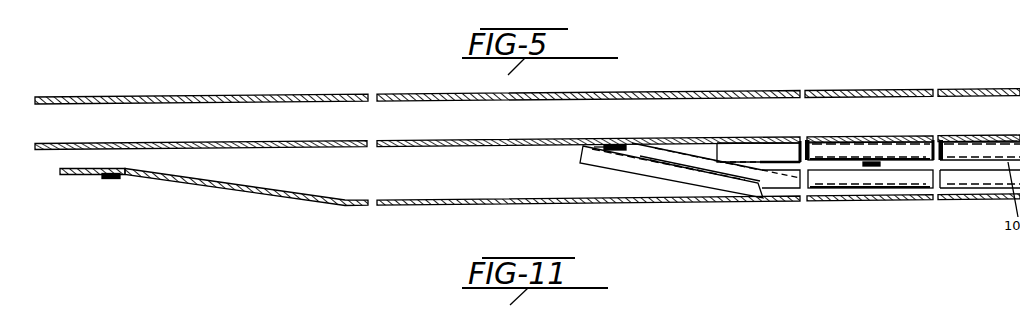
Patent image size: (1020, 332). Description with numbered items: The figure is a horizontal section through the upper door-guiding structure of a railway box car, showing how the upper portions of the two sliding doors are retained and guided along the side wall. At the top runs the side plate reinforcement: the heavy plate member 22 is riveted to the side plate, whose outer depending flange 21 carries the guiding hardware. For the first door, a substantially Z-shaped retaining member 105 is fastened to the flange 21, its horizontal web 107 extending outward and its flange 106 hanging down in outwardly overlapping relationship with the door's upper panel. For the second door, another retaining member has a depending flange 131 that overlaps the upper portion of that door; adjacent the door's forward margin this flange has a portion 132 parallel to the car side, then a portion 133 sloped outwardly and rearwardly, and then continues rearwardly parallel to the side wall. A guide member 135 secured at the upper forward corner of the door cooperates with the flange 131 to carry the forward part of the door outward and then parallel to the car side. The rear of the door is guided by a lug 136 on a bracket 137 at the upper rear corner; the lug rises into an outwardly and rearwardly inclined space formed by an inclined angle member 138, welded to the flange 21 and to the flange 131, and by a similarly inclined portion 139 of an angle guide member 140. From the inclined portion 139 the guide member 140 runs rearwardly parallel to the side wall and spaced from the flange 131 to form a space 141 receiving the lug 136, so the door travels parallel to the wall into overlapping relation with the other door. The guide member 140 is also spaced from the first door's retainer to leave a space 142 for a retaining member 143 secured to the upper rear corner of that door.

The outer depending flange 21 is at (240, 142).
The heavy plate member 22 is at (216, 96).
The Z-shaped retaining member 105 is at (767, 150).
The flange 106 is at (790, 161).
The horizontal web 107 is at (815, 137).
The depending flange 131 is at (430, 205).
The portion parallel to side wall 132 is at (82, 175).
The outwardly and rearwardly sloped portion 133 is at (220, 184).
The guide member 135 is at (110, 179).
The lug 136 is at (615, 144).
The bracket 137 is at (718, 174).
The inclined angle member 138 is at (597, 167).
The inclined portion 139 is at (672, 158).
The angle guide member 140 is at (837, 177).
The space 141 is at (853, 189).
The space 142 is at (852, 162).
The retaining member 143 is at (873, 167).